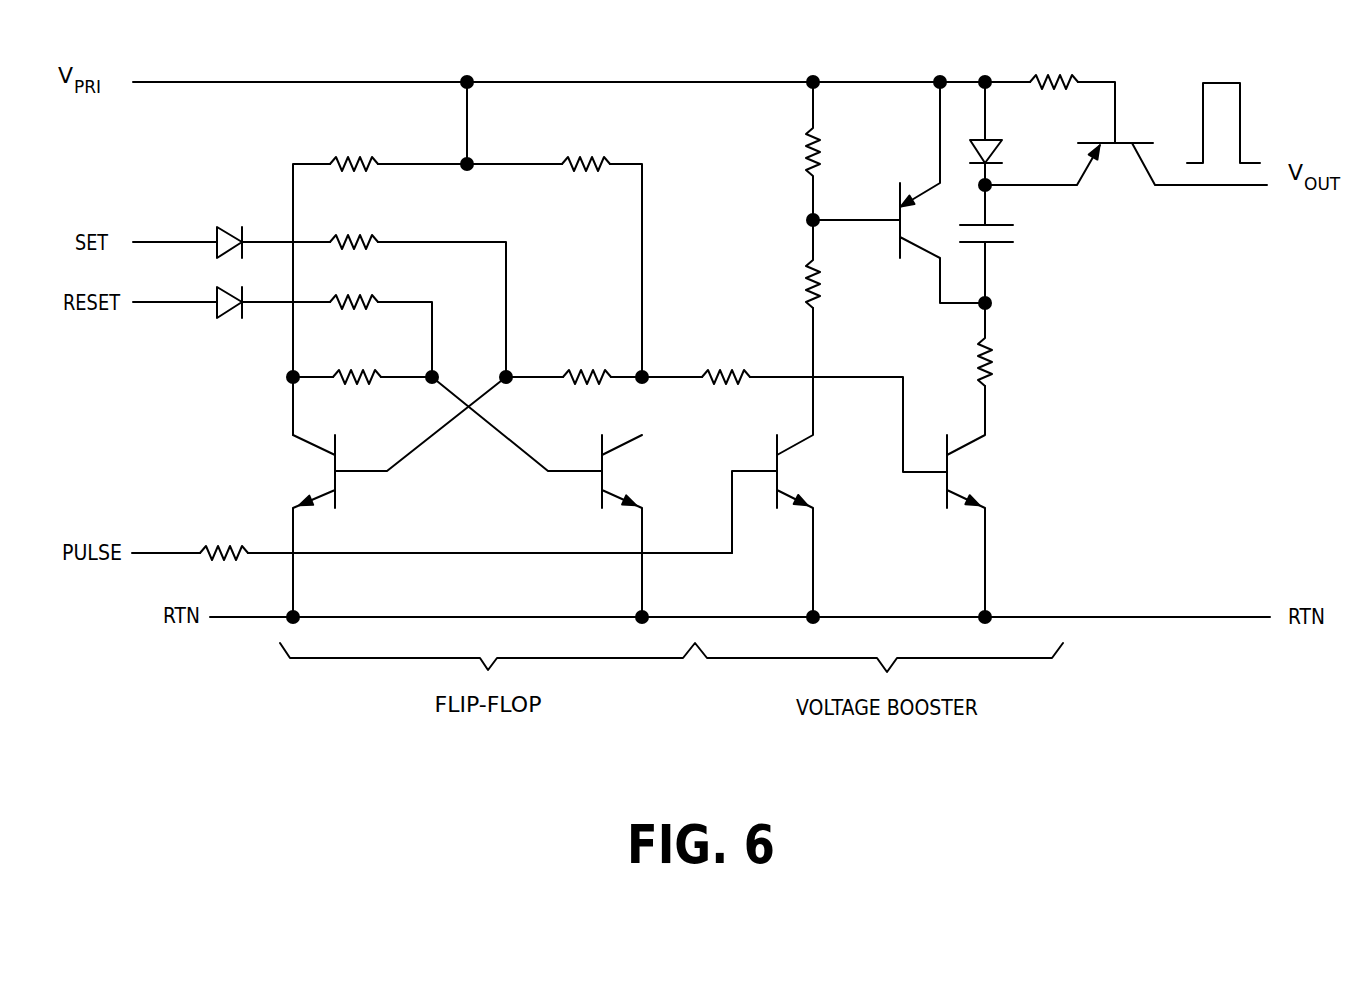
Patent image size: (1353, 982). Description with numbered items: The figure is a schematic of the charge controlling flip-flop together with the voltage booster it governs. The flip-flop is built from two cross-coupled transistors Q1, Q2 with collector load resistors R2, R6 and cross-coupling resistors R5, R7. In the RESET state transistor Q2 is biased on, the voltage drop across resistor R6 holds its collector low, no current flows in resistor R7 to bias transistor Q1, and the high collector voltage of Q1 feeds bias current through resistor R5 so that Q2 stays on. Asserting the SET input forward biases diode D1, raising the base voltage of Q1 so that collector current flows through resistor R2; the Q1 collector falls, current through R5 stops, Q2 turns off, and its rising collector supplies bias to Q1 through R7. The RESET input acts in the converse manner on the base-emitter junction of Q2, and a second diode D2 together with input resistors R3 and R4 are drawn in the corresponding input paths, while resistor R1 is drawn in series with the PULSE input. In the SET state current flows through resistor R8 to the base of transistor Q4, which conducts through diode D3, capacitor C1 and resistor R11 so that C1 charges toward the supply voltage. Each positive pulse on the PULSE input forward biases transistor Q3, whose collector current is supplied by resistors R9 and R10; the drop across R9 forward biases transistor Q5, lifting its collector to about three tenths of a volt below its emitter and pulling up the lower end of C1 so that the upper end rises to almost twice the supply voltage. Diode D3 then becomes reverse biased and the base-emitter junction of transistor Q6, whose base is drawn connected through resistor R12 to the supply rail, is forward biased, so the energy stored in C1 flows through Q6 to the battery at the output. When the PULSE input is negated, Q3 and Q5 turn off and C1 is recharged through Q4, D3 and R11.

The pulse input resistor R1 is at (224, 535).
The resistor R2 is at (354, 151).
The set input resistor R3 is at (354, 229).
The reset input resistor R4 is at (354, 289).
The resistor R5 is at (357, 363).
The resistor R6 is at (586, 151).
The resistor R7 is at (587, 363).
The resistor R8 is at (726, 363).
The resistor R9 is at (787, 151).
The resistor R10 is at (778, 264).
The resistor R11 is at (1014, 344).
The output transistor base resistor R12 is at (1054, 64).
The diode D1 is at (230, 225).
The reset input diode D2 is at (230, 318).
The diode D3 is at (1004, 133).
The capacitor C1 is at (1006, 244).
The transistor Q1 is at (380, 497).
The transistor Q2 is at (544, 497).
The transistor Q3 is at (781, 462).
The transistor Q4 is at (975, 501).
The transistor Q5 is at (899, 192).
The transistor Q6 is at (1126, 179).